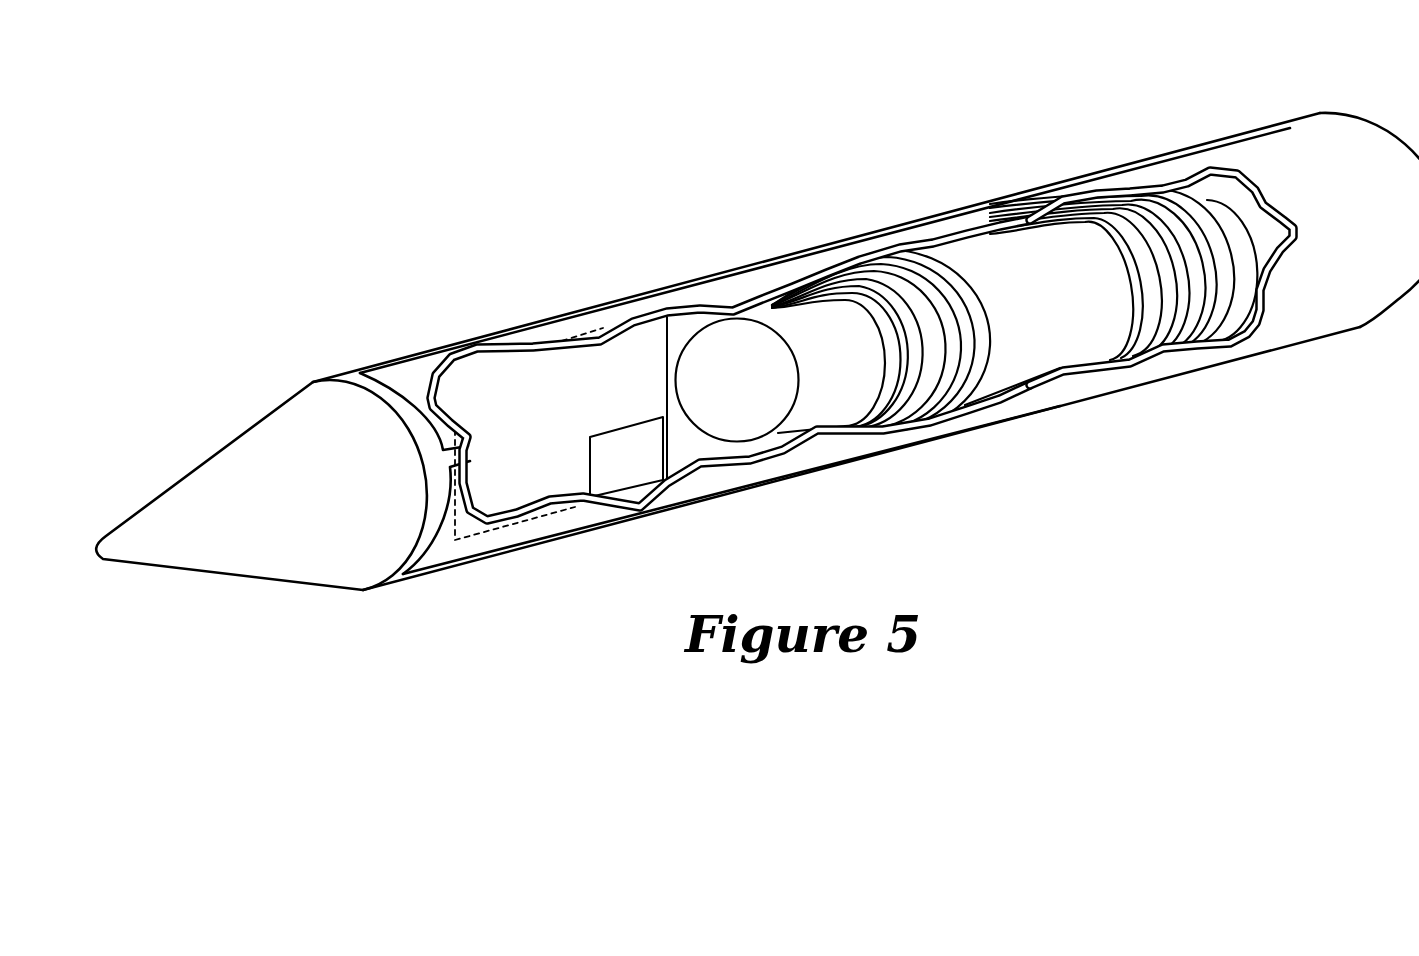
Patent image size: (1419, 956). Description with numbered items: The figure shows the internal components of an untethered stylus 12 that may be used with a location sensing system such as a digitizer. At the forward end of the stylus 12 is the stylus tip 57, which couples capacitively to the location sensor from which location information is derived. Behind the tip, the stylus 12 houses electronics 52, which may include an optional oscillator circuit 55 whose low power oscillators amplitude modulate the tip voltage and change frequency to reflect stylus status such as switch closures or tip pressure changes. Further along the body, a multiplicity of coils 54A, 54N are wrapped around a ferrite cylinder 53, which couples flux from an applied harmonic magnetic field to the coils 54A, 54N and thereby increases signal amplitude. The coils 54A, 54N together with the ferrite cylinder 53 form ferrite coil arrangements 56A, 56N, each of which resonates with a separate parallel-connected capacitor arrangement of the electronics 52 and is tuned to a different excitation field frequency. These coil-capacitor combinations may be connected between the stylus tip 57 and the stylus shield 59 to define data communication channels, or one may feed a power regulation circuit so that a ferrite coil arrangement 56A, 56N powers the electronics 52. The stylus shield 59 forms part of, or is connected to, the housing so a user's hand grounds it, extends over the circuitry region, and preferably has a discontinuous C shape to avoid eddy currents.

The untethered stylus 12 is at (316, 340).
The stylus tip 57 is at (182, 487).
The stylus shield 59 is at (427, 368).
The electronics 52 is at (561, 382).
The oscillator circuit 55 is at (652, 477).
The ferrite cylinder 53 is at (1023, 270).
The coil 54A is at (900, 277).
The coil 54N is at (1140, 213).
The ferrite coil arrangement 56A is at (930, 247).
The ferrite coil arrangement 56N is at (1187, 193).